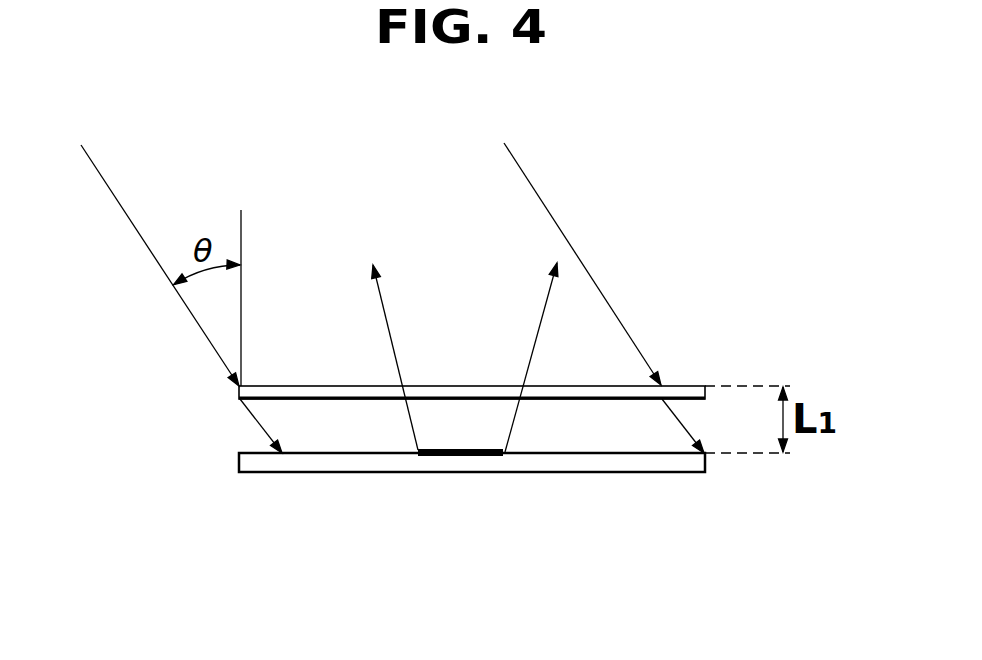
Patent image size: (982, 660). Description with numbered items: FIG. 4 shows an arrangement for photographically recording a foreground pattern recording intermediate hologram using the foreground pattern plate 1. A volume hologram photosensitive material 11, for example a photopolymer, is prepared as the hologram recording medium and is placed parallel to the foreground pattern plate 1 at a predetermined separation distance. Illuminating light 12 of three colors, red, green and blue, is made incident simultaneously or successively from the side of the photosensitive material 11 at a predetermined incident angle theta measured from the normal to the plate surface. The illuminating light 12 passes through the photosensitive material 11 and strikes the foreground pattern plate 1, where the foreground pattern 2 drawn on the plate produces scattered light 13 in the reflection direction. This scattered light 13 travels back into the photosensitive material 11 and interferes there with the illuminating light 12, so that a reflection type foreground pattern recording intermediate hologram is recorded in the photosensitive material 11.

The foreground pattern plate 1 is at (697, 463).
The foreground pattern 2 is at (467, 457).
The volume hologram photosensitive material 11 is at (697, 383).
The illuminating light 12 is at (552, 217).
The scattered light 13 is at (387, 322).